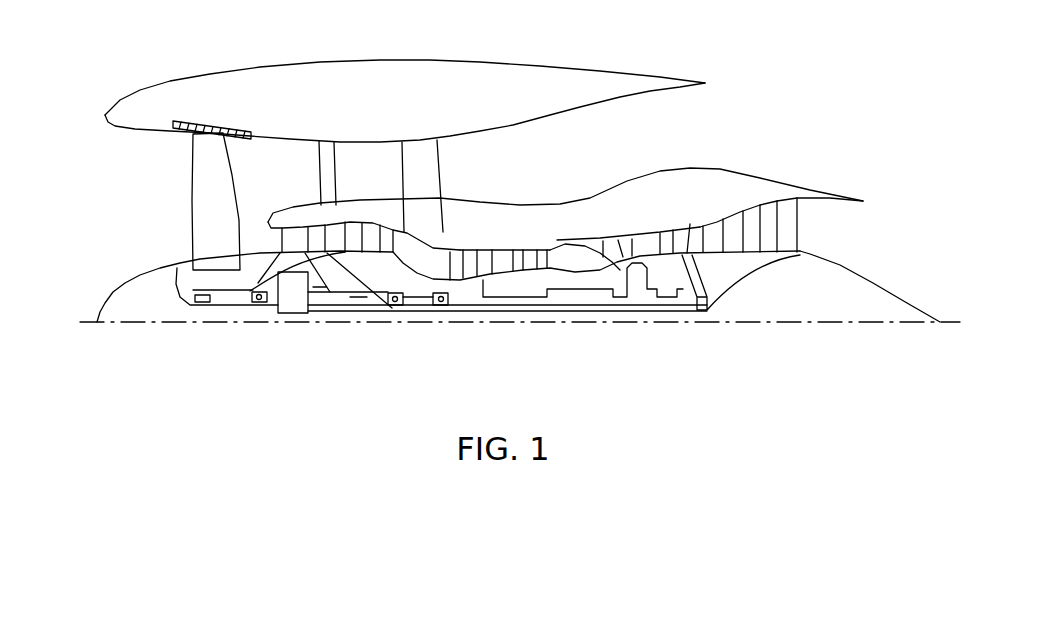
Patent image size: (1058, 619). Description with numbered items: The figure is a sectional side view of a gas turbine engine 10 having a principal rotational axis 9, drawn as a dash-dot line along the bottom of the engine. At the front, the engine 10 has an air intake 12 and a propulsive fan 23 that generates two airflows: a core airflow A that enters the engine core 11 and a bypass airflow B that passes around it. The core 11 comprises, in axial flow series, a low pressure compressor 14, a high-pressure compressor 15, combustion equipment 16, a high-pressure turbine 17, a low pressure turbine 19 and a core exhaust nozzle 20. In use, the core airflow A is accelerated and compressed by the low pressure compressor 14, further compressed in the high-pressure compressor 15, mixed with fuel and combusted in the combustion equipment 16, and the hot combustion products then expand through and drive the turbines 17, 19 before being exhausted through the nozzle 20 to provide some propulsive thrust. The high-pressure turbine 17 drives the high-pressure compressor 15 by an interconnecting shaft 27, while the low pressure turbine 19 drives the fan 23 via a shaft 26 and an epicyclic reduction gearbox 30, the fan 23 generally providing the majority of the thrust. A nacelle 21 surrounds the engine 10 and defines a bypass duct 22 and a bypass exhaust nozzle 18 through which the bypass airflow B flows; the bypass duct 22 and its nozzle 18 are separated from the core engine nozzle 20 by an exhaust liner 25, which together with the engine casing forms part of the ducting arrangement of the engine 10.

The principal rotational axis 9 is at (767, 325).
The gas turbine engine 10 is at (174, 72).
The core 11 is at (567, 220).
The air intake 12 is at (126, 165).
The low pressure compressor 14 is at (361, 232).
The high-pressure compressor 15 is at (503, 258).
The combustion equipment 16 is at (581, 262).
The high-pressure turbine 17 is at (638, 247).
The bypass exhaust nozzle 18 is at (773, 125).
The low pressure turbine 19 is at (770, 217).
The core exhaust nozzle 20 is at (845, 237).
The nacelle 21 is at (427, 77).
The bypass duct 22 is at (681, 138).
The propulsive fan 23 is at (200, 206).
The exhaust liner 25 is at (813, 194).
The shaft 26 is at (485, 313).
The interconnecting shaft 27 is at (542, 300).
The epicyclic gearbox 30 is at (292, 302).
The core airflow A is at (262, 239).
The bypass airflow B is at (270, 173).